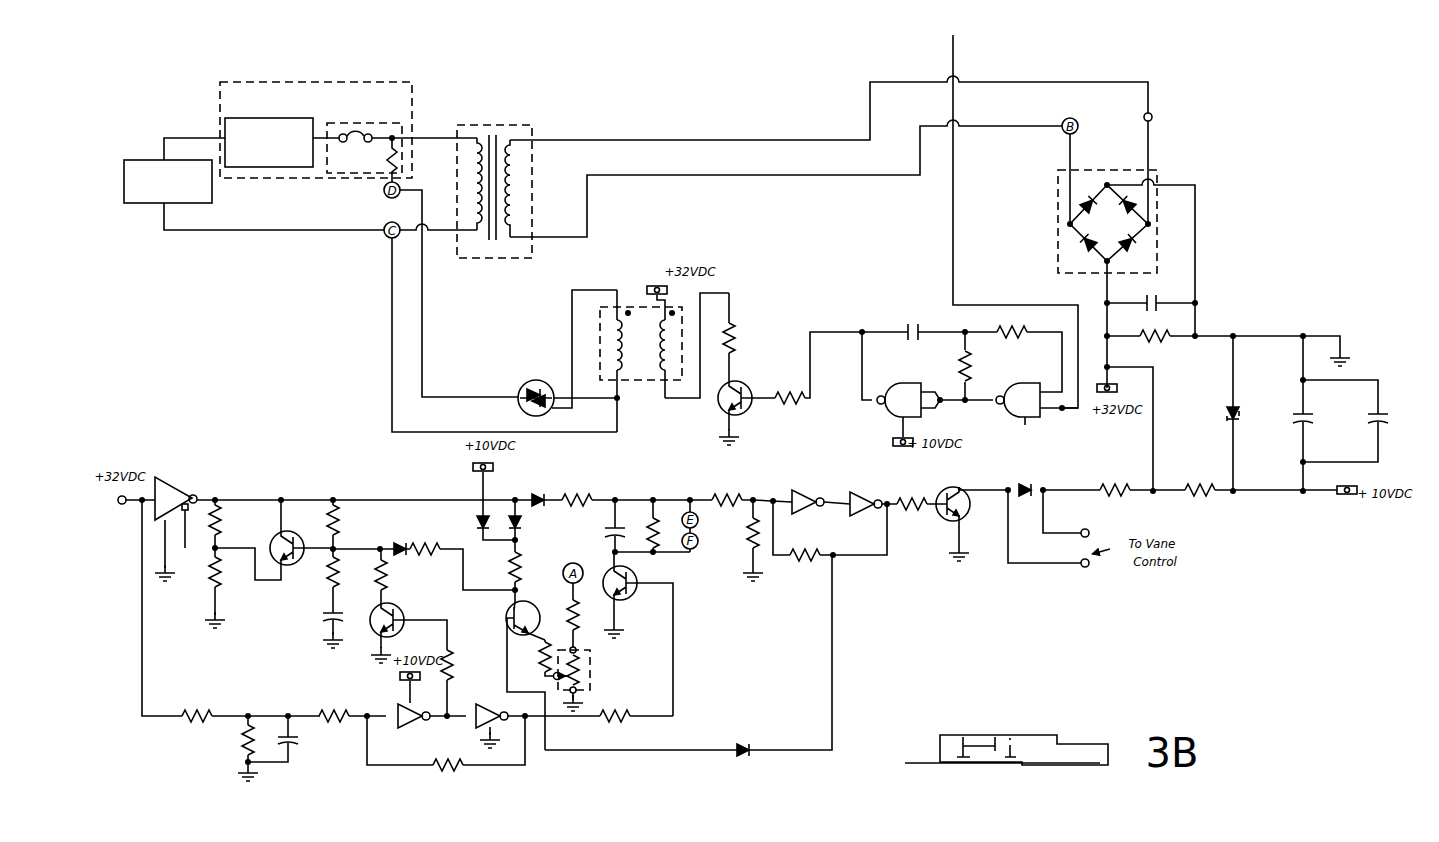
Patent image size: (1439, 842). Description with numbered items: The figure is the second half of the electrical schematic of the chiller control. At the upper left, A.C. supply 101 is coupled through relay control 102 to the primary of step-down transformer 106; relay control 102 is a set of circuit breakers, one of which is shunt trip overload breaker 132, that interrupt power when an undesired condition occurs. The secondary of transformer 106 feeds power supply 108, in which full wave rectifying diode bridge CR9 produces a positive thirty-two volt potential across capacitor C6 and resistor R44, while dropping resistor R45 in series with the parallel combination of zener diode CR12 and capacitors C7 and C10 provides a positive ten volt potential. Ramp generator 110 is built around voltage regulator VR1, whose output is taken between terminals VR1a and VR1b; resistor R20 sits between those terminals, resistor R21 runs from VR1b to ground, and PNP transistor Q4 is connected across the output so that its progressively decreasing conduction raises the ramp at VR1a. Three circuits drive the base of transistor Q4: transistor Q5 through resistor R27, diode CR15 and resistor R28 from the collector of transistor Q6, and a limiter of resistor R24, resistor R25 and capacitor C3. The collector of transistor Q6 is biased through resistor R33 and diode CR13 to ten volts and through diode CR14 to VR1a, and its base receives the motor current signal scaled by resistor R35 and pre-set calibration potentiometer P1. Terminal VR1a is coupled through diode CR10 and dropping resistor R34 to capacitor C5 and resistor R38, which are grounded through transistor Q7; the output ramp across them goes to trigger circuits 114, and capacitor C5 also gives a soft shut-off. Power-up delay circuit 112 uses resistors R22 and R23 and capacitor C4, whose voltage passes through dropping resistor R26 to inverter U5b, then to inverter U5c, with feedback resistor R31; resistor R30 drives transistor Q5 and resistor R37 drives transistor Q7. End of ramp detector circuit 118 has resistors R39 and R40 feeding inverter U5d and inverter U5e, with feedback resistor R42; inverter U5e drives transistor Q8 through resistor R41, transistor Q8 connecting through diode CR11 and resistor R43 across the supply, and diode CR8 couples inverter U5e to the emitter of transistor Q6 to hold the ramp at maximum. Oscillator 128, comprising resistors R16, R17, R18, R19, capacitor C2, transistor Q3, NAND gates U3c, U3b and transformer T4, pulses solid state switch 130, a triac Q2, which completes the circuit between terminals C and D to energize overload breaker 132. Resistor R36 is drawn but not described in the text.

The A.C. supply 101 is at (143, 204).
The relay control 102 is at (412, 85).
The step-down transformer 106 is at (527, 125).
The power supply 108 is at (1255, 282).
The ramp generator 110 is at (177, 470).
The power-up delay circuit 112 is at (238, 766).
The trigger circuits 114 is at (708, 536).
The end of ramp detector circuit 118 is at (944, 566).
The oscillator 128 is at (802, 292).
The solid state switch 130 is at (542, 348).
The overload breaker 132 is at (334, 121).
The voltage regulator VR1 is at (163, 472).
The output terminal of voltage regulator VR1a is at (200, 493).
The output terminal of voltage regulator VR1b is at (182, 511).
The resistor R20 is at (220, 505).
The second resistor R21 is at (212, 576).
The resistor R22 is at (196, 710).
The resistor R23 is at (243, 738).
The resistor R24 is at (338, 510).
The resistor R25 is at (330, 582).
The dropping resistor R26 is at (330, 712).
The resistor R27 is at (386, 577).
The resistor R28 is at (424, 545).
The resistor R30 is at (452, 656).
The feedback resistor R31 is at (462, 770).
The resistor R33 is at (522, 562).
The dropping resistor R34 is at (568, 496).
The resistor R35 is at (590, 622).
The resistor R36 is at (531, 657).
The resistor R37 is at (628, 722).
The resistor R38 is at (660, 520).
The resistor R39 is at (724, 490).
The resistor R40 is at (760, 556).
The resistor R41 is at (900, 510).
The feedback resistor R42 is at (802, 552).
The resistor R43 is at (1127, 496).
The resistor R44 is at (1168, 338).
The dropping resistor R45 is at (1212, 496).
The resistor R16 is at (737, 343).
The resistor R17 is at (797, 400).
The resistor R18 is at (975, 378).
The resistor R19 is at (1020, 332).
The capacitor C2 is at (916, 320).
The capacitor C3 is at (322, 624).
The capacitor C4 is at (296, 742).
The capacitor C5 is at (618, 524).
The capacitor C6 is at (1152, 299).
The capacitor C7 is at (1322, 421).
The capacitor C10 is at (1388, 420).
The diode CR8 is at (742, 758).
The full wave rectifying diode bridge CR9 is at (1157, 170).
The diode CR10 is at (536, 490).
The diode CR11 is at (1033, 486).
The zener diode CR12 is at (1242, 406).
The diode CR13 is at (476, 510).
The diode CR14 is at (524, 524).
The diode CR15 is at (403, 555).
The triac Q2 is at (528, 382).
The transistor Q3 is at (744, 382).
The PNP transistor Q4 is at (288, 530).
The transistor Q5 is at (370, 634).
The transistor Q6 is at (508, 612).
The transistor Q7 is at (628, 603).
The transistor Q8 is at (957, 488).
The NAND gate U3b is at (1028, 420).
The NAND gate U3c is at (902, 383).
The inverter U5b is at (410, 727).
The second inverter U5c is at (488, 705).
The inverter U5d is at (800, 490).
The inverter U5e is at (866, 492).
The transformer T4 is at (626, 305).
The pre-set calibration potentiometer P1 is at (594, 674).